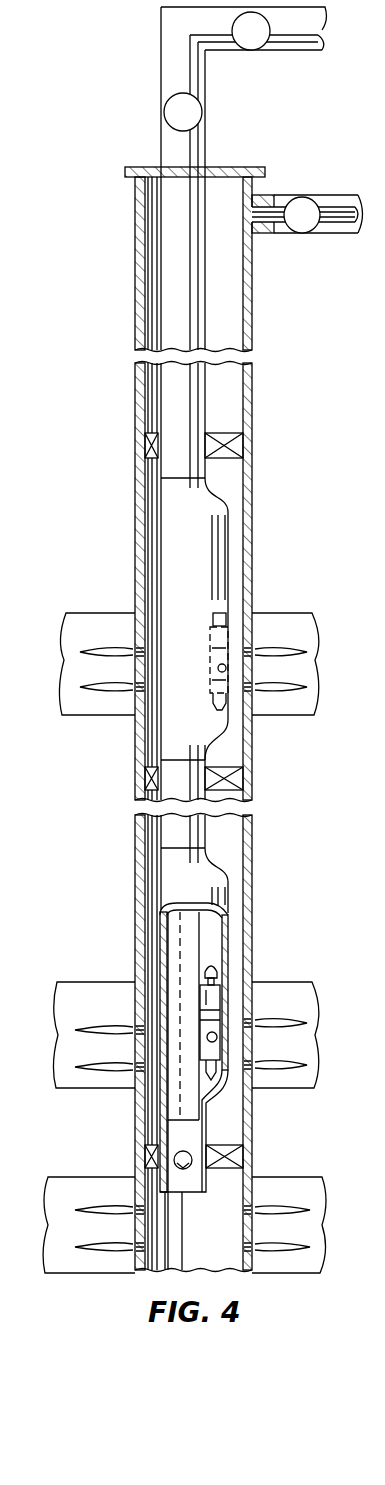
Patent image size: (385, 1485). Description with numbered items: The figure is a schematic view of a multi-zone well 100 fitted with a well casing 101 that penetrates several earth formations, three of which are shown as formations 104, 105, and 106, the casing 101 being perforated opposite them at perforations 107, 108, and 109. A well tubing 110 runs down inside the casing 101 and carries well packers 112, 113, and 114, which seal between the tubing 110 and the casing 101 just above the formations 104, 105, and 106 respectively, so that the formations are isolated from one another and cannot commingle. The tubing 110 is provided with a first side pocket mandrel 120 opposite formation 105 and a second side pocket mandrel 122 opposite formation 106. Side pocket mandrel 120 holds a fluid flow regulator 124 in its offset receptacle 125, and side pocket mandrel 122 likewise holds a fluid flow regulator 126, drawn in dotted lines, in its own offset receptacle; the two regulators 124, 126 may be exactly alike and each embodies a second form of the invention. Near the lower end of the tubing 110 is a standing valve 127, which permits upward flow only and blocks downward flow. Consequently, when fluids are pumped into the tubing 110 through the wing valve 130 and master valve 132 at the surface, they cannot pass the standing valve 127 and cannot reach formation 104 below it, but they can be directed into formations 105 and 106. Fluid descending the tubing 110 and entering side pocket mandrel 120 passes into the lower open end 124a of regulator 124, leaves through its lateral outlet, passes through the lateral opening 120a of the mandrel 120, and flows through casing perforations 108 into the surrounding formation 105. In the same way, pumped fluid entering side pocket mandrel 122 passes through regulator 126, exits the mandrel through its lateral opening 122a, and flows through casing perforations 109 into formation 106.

The well 100 is at (104, 258).
The well casing 101 is at (137, 330).
The earth formation 104 is at (307, 1192).
The earth formation 105 is at (293, 992).
The earth formation 106 is at (302, 630).
The casing perforations 107 is at (243, 1213).
The casing perforations 108 is at (132, 1065).
The casing perforations 109 is at (140, 670).
The well tubing 110 is at (198, 295).
The well packer 112 is at (243, 1157).
The well packer 113 is at (235, 780).
The well packer 114 is at (242, 447).
The first side pocket mandrel 120 is at (234, 888).
The lateral opening 120a is at (218, 1040).
The second side pocket mandrel 122 is at (215, 537).
The lateral opening 122a is at (226, 671).
The fluid flow regulator 124 is at (234, 985).
The lower open end 124a is at (222, 1096).
The offset receptacle 125 is at (198, 1050).
The fluid flow regulator 126 is at (223, 642).
The standing valve 127 is at (175, 1156).
The wing valve 130 is at (265, 42).
The master valve 132 is at (164, 112).